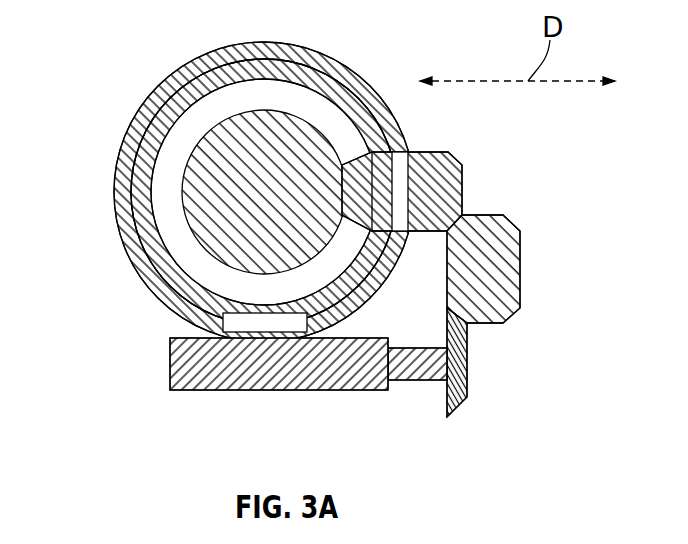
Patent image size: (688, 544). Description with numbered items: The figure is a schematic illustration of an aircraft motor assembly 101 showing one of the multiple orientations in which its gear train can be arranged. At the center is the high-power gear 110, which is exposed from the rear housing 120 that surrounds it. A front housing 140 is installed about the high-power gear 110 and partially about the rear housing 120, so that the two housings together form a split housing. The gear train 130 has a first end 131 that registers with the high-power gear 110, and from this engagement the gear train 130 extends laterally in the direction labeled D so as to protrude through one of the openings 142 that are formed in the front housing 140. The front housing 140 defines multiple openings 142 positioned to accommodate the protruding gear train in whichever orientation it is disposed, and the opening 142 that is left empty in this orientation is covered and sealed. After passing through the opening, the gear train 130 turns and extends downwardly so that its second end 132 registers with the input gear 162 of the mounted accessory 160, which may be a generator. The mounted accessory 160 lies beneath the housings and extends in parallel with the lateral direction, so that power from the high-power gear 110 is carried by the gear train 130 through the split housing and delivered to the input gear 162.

The aircraft motor assembly 101 is at (168, 72).
The high-power gear 110 is at (171, 165).
The rear housing 120 is at (345, 67).
The gear train 130 is at (463, 210).
The first end 131 is at (350, 190).
The second end 132 is at (502, 315).
The front housing 140 is at (150, 232).
The openings 142 is at (212, 326).
The mounted accessory 160 is at (156, 372).
The input gear 162 is at (457, 362).